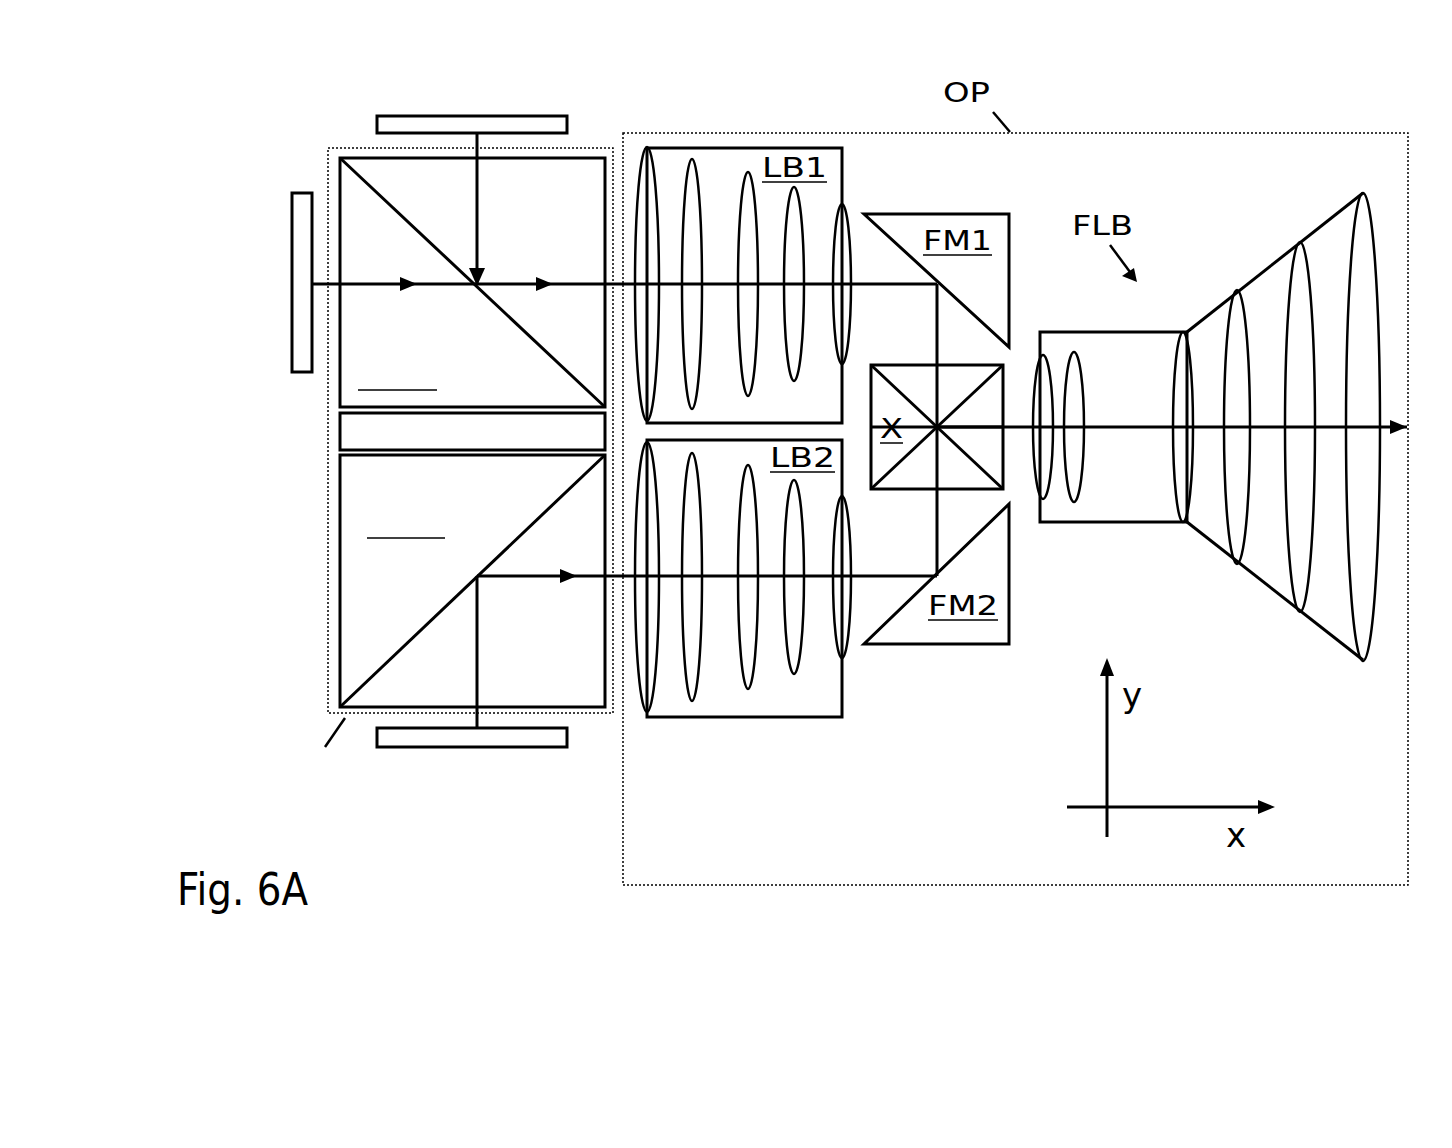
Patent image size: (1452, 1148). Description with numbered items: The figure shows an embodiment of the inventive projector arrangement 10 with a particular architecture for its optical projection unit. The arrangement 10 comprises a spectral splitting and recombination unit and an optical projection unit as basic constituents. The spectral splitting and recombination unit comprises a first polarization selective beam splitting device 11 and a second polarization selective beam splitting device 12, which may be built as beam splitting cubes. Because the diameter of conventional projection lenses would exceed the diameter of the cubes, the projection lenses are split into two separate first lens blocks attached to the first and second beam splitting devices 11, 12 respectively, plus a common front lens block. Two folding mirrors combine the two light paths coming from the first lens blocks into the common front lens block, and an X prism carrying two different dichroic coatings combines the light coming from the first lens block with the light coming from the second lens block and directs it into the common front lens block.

The projector arrangement 10 is at (292, 92).
The first polarization selective beam splitting device 11 is at (443, 505).
The second polarization selective beam splitting device 12 is at (436, 348).